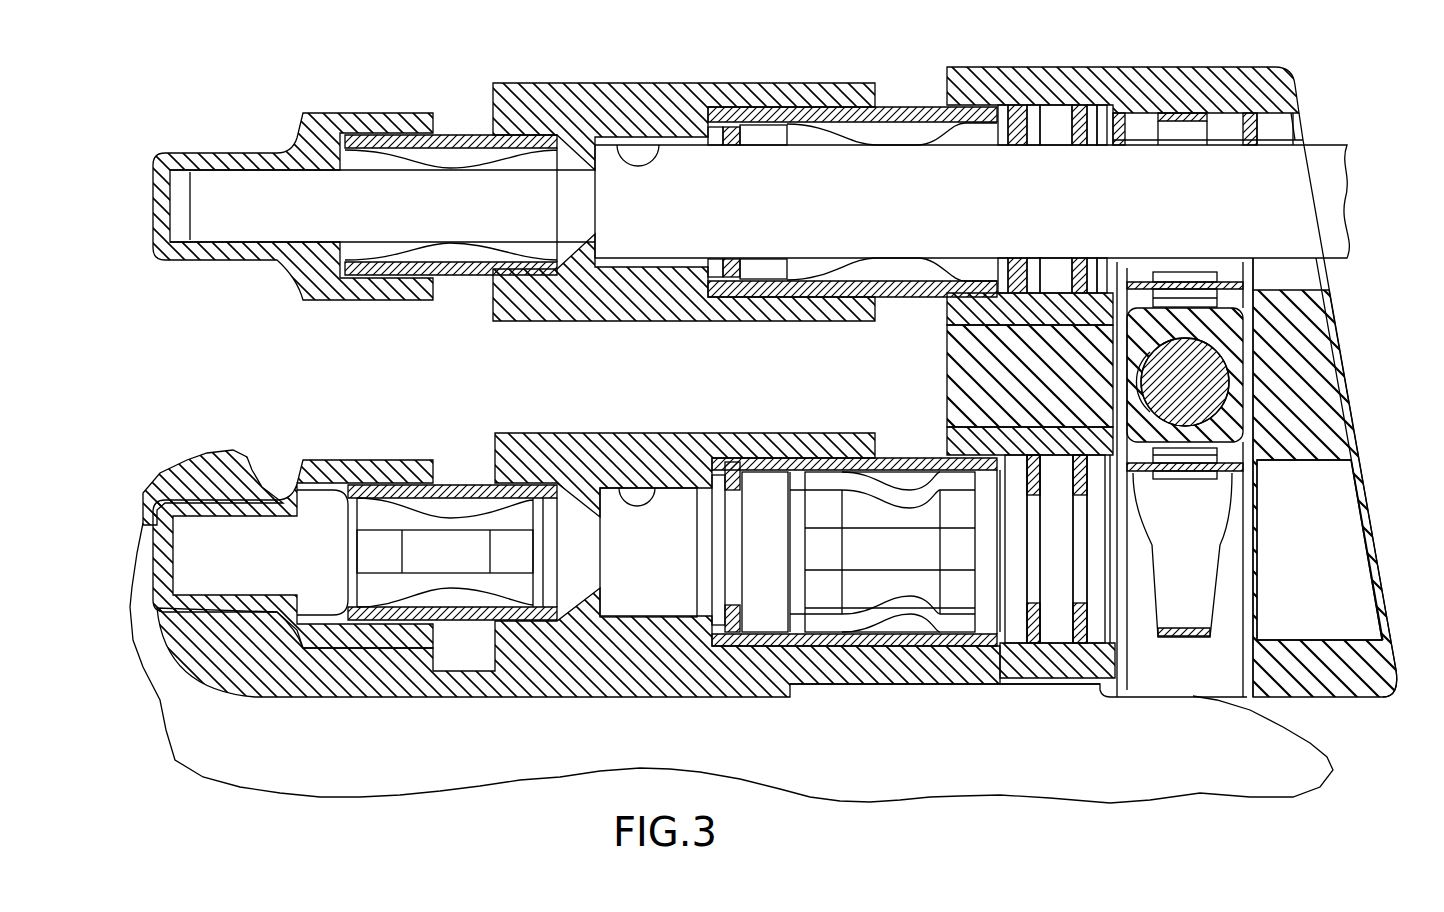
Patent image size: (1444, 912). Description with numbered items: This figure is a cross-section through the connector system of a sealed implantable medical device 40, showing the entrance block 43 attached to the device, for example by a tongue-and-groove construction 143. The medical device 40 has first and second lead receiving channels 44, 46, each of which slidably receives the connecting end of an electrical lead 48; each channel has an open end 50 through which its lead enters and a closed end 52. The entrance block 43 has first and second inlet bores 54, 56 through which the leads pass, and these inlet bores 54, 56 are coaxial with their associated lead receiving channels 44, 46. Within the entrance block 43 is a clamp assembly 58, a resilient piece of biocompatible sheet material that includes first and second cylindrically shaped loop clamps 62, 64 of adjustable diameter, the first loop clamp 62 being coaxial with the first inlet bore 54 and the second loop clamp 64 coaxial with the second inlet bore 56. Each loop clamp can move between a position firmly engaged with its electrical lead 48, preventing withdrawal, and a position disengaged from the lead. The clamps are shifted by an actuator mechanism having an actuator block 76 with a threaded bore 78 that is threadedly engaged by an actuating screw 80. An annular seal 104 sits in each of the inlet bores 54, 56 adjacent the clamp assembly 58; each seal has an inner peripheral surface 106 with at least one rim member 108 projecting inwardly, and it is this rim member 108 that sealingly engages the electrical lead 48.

The sealed implantable medical device 40 is at (1143, 803).
The entrance block 43 is at (1356, 366).
The first lead receiving channel 44 is at (658, 150).
The second lead receiving channel 46 is at (640, 488).
The electrical lead 48 is at (908, 190).
The open end 50 is at (1003, 102).
The closed end 52 is at (180, 220).
The first inlet bore 54 is at (1275, 135).
The second inlet bore 56 is at (1345, 638).
The clamp assembly 58 is at (1203, 110).
The first loop clamp 62 is at (1182, 112).
The second loop clamp 64 is at (1228, 522).
The actuator block 76 is at (1225, 335).
The threaded bore 78 is at (1140, 375).
The actuating screw 80 is at (1247, 467).
The annular seal 104 is at (1012, 118).
The inner peripheral surface 106 is at (1050, 122).
The rim member 108 is at (1100, 148).
The tongue-and-groove construction 143 is at (1064, 699).